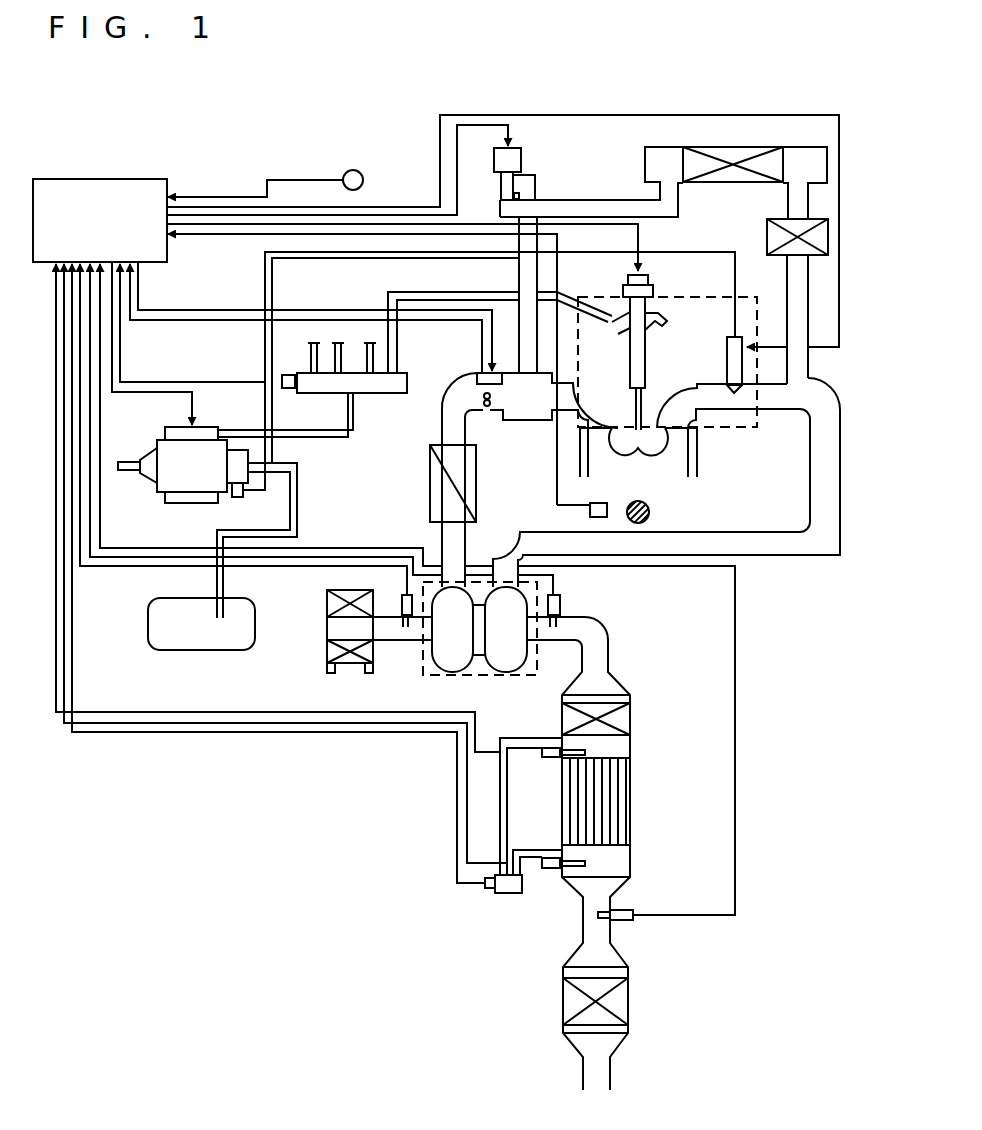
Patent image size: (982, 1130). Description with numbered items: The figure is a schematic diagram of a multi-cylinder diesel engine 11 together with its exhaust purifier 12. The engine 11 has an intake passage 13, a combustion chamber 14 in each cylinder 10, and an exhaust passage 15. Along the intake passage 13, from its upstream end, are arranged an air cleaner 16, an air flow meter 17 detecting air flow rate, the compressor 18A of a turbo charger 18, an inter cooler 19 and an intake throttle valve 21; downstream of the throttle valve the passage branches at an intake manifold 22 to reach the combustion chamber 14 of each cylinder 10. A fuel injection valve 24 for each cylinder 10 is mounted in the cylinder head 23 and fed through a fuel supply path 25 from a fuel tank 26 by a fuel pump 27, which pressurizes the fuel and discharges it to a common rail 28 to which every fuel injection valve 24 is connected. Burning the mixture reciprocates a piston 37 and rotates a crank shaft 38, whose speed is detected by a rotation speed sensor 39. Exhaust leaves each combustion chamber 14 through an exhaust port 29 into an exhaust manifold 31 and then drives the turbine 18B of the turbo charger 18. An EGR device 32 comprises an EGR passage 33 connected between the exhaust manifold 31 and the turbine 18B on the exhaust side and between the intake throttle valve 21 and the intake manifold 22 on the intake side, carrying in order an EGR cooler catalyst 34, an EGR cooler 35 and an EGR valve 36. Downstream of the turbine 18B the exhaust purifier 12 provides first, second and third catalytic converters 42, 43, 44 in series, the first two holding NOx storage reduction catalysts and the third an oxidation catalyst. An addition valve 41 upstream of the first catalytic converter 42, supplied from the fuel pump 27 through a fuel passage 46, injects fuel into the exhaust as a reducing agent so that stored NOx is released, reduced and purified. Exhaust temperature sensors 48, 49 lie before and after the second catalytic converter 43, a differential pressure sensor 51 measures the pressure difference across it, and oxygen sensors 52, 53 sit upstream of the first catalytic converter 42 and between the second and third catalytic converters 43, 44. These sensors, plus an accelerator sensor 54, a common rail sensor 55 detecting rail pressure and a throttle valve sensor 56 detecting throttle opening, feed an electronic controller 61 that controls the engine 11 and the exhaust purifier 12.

The cylinder 10 is at (588, 478).
The engine 11 is at (747, 568).
The exhaust purifier 12 is at (632, 672).
The intake passage 13 is at (442, 422).
The combustion chamber 14 is at (655, 455).
The exhaust passage 15 is at (805, 478).
The air cleaner 16 is at (327, 650).
The air flow meter 17 is at (400, 597).
The turbo charger 18 is at (420, 674).
The compressor 18A is at (455, 665).
The turbine 18B is at (505, 665).
The inter cooler 19 is at (430, 503).
The intake throttle valve 21 is at (487, 410).
The intake manifold 22 is at (560, 420).
The cylinder head 23 is at (665, 296).
The fuel injection valve 24 is at (627, 312).
The fuel supply path 25 is at (318, 440).
The fuel tank 26 is at (150, 622).
The fuel pump 27 is at (167, 478).
The common rail 28 is at (402, 366).
The exhaust port 29 is at (680, 397).
The exhaust manifold 31 is at (768, 412).
The EGR device 32 is at (630, 108).
The EGR passage 33 is at (586, 200).
The EGR cooler catalyst 34 is at (767, 228).
The EGR cooler 35 is at (713, 183).
The EGR valve 36 is at (521, 158).
The piston 37 is at (678, 450).
The crank shaft 38 is at (652, 512).
The rotation speed sensor 39 is at (590, 515).
The addition valve 41 is at (727, 347).
The first catalytic converter 42 is at (630, 722).
The second catalytic converter 43 is at (630, 800).
The third catalytic converter 44 is at (640, 1002).
The fuel passage 46 is at (305, 258).
The exhaust temperature sensor 48 is at (550, 758).
The exhaust temperature sensor 49 is at (550, 870).
The differential pressure sensor 51 is at (505, 895).
The oxygen sensor 52 is at (560, 602).
The oxygen sensor 53 is at (630, 911).
The accelerator sensor 54 is at (363, 182).
The common rail sensor 55 is at (290, 388).
The throttle valve sensor 56 is at (477, 376).
The electronic controller 61 is at (98, 179).